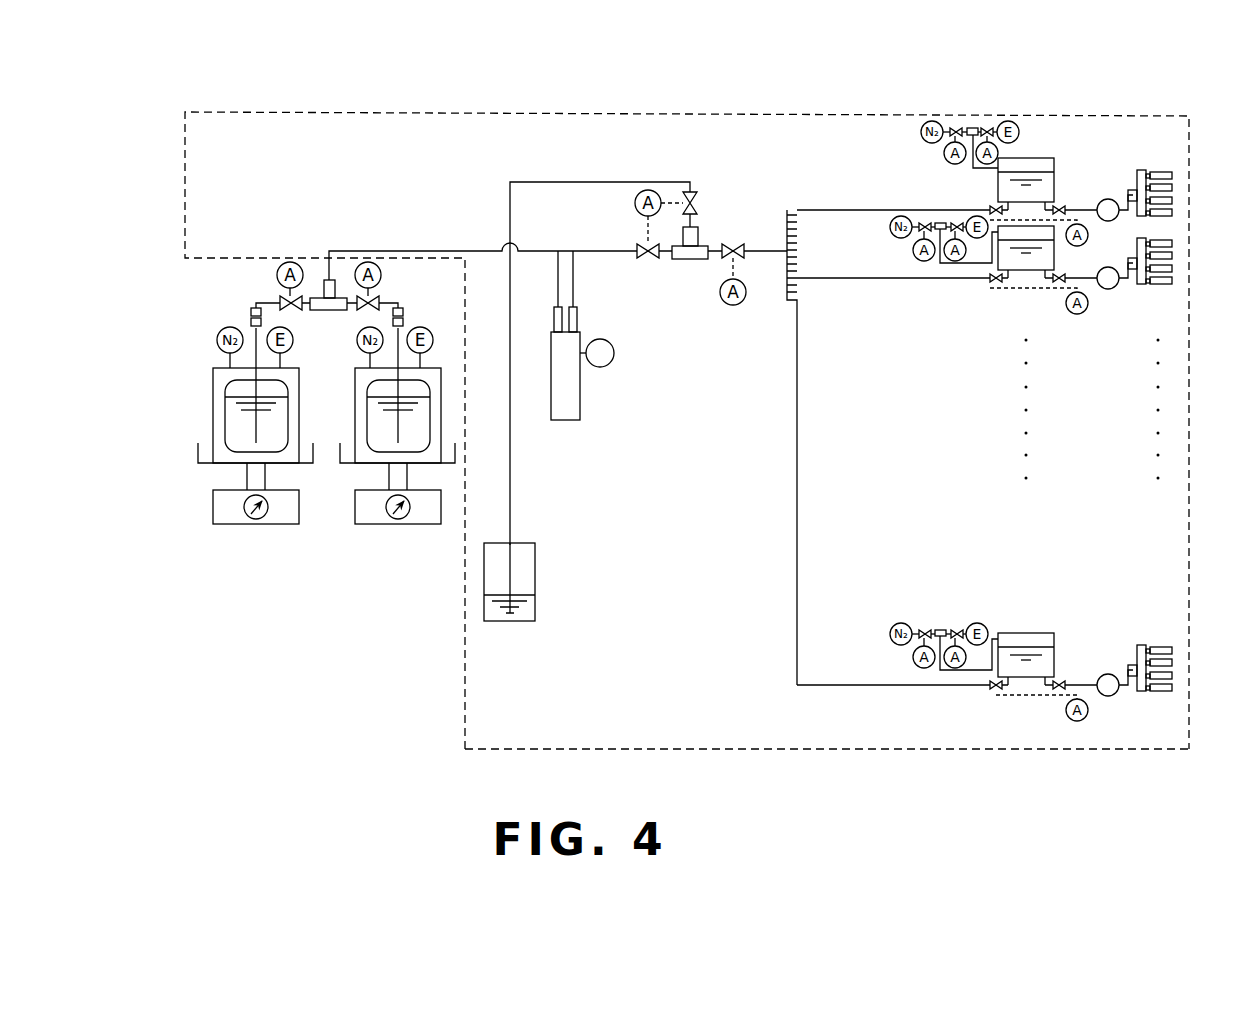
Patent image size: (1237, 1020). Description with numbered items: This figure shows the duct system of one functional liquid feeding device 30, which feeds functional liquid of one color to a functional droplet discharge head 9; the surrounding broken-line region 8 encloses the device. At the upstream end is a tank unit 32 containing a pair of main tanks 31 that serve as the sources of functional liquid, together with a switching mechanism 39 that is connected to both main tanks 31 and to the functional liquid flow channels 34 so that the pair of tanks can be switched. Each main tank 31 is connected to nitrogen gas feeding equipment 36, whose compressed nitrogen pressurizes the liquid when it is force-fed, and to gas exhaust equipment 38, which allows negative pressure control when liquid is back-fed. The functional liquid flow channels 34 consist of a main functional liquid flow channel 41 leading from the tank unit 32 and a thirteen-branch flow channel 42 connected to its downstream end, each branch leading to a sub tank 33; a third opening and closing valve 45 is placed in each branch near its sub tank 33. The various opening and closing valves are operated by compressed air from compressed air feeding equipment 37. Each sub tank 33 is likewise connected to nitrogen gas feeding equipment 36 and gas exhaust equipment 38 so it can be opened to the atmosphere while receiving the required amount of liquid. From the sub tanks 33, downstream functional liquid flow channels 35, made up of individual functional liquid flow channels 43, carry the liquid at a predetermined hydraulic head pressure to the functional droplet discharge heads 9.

The substrate processing apparatus 8 is at (519, 752).
The functional droplet discharge head 9 is at (1172, 176).
The functional liquid feeding device 30 is at (299, 92).
The main tank 31 is at (213, 372).
The tank unit 32 is at (319, 547).
The sub tank 33 is at (1050, 158).
The functional liquid flow channel 34 is at (438, 183).
The downstream functional liquid flow channel 35 is at (1097, 131).
The nitrogen gas feeding equipment 36 is at (217, 340).
The compressed air feeding equipment 37 is at (277, 275).
The gas exhaust equipment 38 is at (293, 344).
The switching mechanism 39 is at (304, 252).
The main functional liquid flow channel 41 is at (437, 250).
The branch flow channel 42 is at (877, 209).
The individual functional liquid flow channel 43 is at (1137, 204).
The third opening and closing valve 45 is at (990, 208).